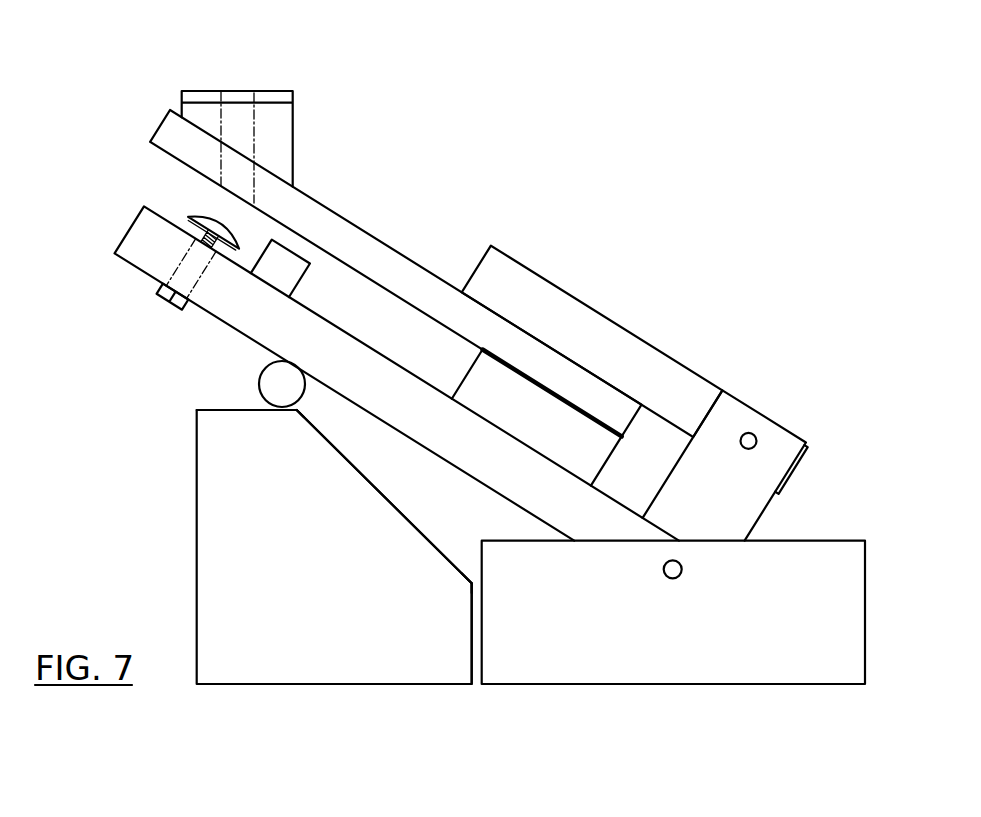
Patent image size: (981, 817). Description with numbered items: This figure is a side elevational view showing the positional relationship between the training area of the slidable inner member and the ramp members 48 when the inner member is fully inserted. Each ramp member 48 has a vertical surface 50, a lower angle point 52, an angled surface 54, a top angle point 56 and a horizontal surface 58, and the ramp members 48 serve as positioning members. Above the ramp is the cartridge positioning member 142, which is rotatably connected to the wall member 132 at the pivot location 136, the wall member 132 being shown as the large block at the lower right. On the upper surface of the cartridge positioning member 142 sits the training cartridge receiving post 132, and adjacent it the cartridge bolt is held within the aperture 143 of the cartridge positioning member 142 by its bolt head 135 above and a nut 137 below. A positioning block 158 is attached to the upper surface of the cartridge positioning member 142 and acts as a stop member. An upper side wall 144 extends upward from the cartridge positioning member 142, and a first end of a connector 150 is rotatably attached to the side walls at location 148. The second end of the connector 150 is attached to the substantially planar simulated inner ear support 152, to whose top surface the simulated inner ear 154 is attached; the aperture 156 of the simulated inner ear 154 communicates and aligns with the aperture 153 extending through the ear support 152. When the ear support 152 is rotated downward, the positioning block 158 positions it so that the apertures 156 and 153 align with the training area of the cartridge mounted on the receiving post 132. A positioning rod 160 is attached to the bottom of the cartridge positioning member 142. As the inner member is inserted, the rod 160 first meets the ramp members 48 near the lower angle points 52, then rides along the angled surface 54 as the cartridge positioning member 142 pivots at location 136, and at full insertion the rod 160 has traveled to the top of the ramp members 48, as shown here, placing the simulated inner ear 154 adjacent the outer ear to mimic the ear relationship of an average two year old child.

The ramp member 48 is at (334, 547).
The vertical surface 50 is at (472, 630).
The lower angle point 52 is at (472, 583).
The angled surface 54 is at (373, 490).
The top angle point 56 is at (297, 412).
The horizontal surface 58 is at (211, 412).
The wall member 132 is at (292, 272).
The bolt head 135 is at (190, 215).
The location 136 is at (682, 569).
The nut 137 is at (158, 290).
The cartridge positioning member 142 is at (483, 478).
The aperture 143 is at (180, 261).
The upper side wall 144 is at (693, 496).
The location 148 is at (751, 432).
The connector 150 is at (563, 343).
The simulated inner ear support 152 is at (377, 243).
The aperture 153 is at (257, 182).
The simulated inner ear 154 is at (292, 118).
The aperture 156 is at (220, 120).
The positioning block 158 is at (498, 418).
The positioning rod 160 is at (259, 383).